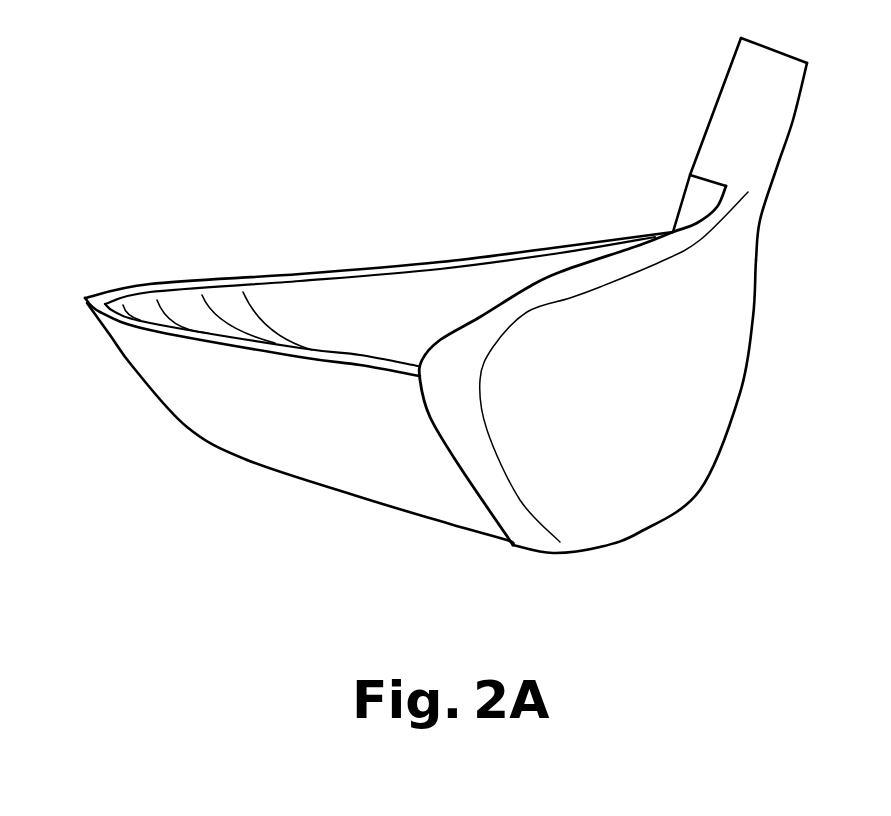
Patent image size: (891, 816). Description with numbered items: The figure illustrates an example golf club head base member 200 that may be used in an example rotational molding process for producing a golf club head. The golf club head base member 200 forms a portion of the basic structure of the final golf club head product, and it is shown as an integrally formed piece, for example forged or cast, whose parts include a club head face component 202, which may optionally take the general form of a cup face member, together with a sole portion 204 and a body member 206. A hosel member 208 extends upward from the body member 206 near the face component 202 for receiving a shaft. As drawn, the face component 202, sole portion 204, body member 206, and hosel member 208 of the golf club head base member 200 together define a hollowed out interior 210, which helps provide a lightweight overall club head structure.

The golf club head base member 200 is at (535, 113).
The club head face component 202 is at (712, 391).
The sole portion 204 is at (482, 537).
The body member 206 is at (132, 368).
The hosel member 208 is at (768, 92).
The hollowed out interior 210 is at (357, 312).